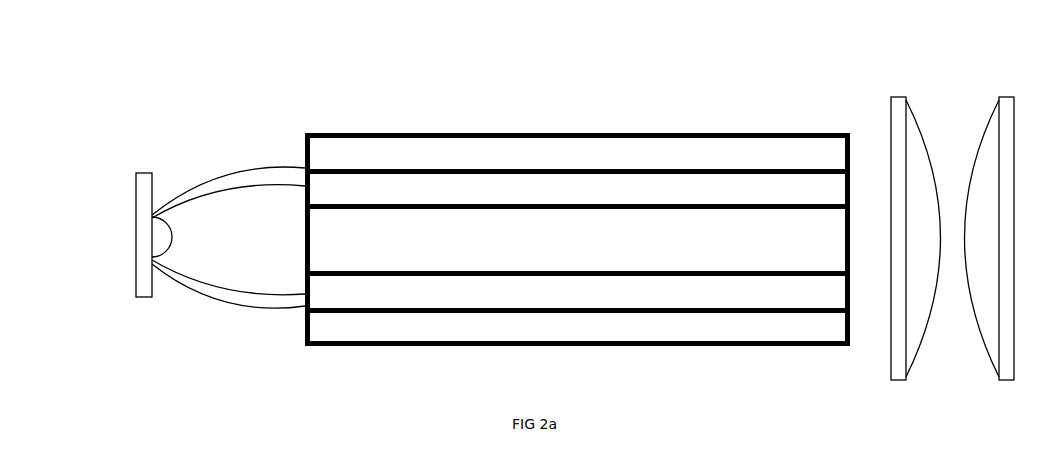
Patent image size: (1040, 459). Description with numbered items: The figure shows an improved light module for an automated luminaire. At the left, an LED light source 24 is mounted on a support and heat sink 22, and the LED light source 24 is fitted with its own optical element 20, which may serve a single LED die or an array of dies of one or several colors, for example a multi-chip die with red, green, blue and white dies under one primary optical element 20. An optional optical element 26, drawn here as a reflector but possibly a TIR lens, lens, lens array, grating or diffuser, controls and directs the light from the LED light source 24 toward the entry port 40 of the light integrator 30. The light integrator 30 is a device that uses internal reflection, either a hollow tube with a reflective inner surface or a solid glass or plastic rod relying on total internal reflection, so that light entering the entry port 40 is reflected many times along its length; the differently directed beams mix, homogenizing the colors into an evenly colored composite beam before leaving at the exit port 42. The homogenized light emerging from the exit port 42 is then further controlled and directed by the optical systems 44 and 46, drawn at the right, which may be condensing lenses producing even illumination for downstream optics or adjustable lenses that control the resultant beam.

The optical element 20 is at (160, 240).
The support and heat sink 22 is at (146, 178).
The LED light source 24 is at (155, 217).
The optical element 26 is at (272, 200).
The light integrator 30 is at (685, 348).
The entry port 40 is at (315, 237).
The exit port 42 is at (852, 148).
The optical system 44 is at (899, 92).
The optical system 46 is at (1007, 92).